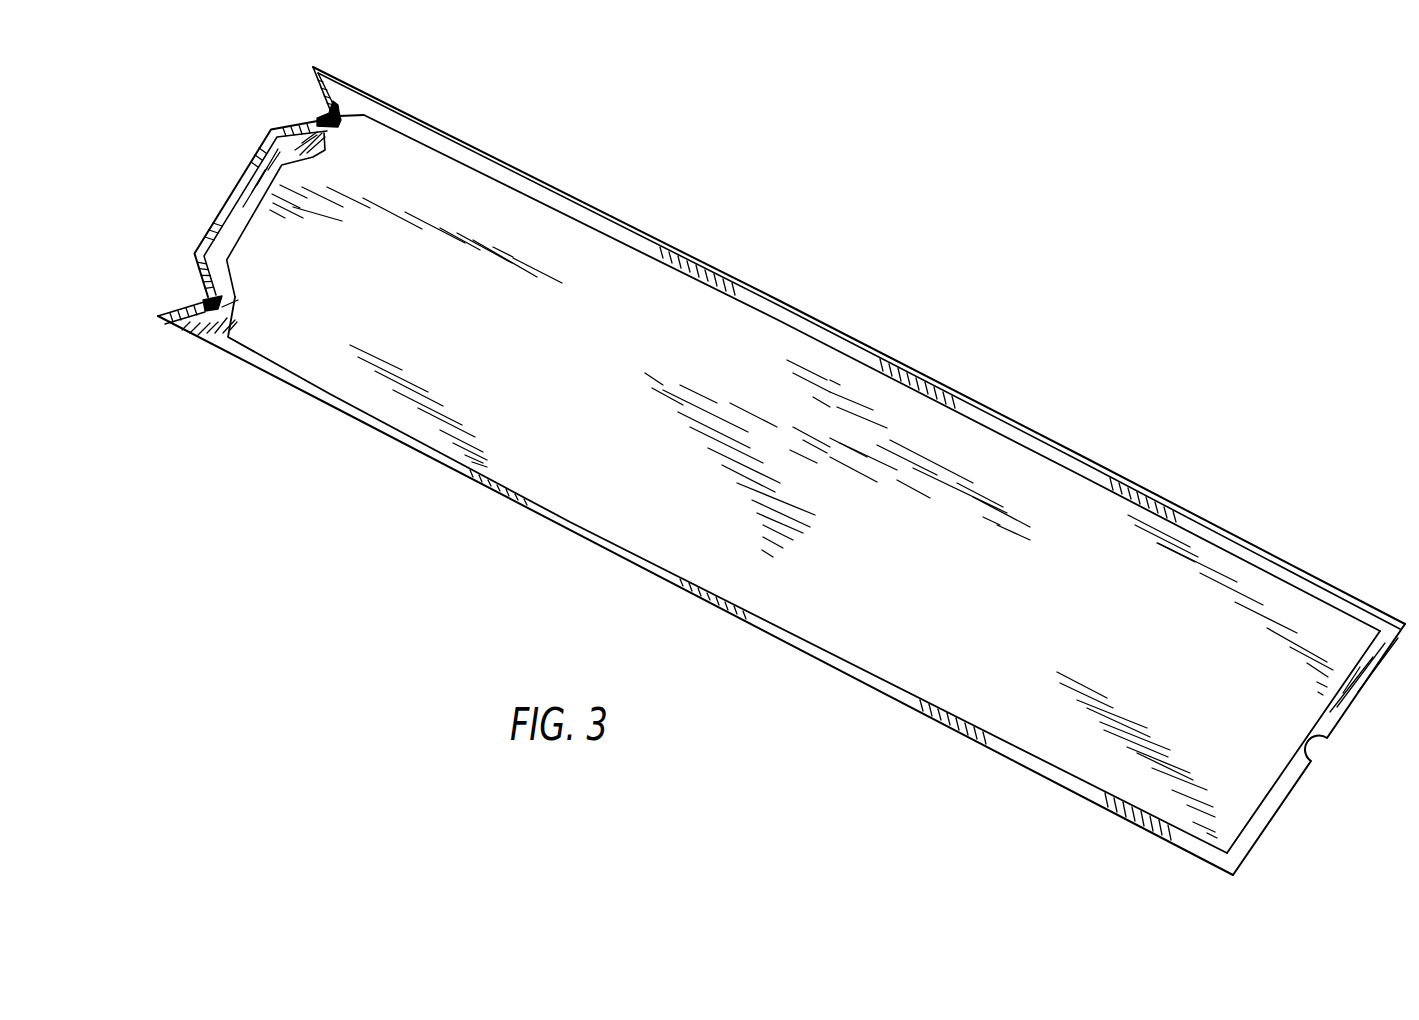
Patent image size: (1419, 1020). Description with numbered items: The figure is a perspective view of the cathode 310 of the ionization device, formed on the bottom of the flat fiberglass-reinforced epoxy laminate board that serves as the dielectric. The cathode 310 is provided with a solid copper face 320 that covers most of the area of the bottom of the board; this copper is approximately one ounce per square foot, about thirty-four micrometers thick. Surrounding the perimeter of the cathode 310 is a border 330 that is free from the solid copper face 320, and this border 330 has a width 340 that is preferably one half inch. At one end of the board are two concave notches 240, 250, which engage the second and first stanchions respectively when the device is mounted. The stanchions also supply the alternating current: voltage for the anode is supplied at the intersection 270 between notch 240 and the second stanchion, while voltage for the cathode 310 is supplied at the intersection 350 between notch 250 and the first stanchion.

The concave notch 240 is at (188, 292).
The concave notch 250 is at (305, 100).
The intersection 270 is at (232, 300).
The cathode 310 is at (811, 664).
The solid copper face 320 is at (775, 338).
The border 330 is at (566, 527).
The width 340 is at (632, 587).
The intersection 350 is at (345, 130).